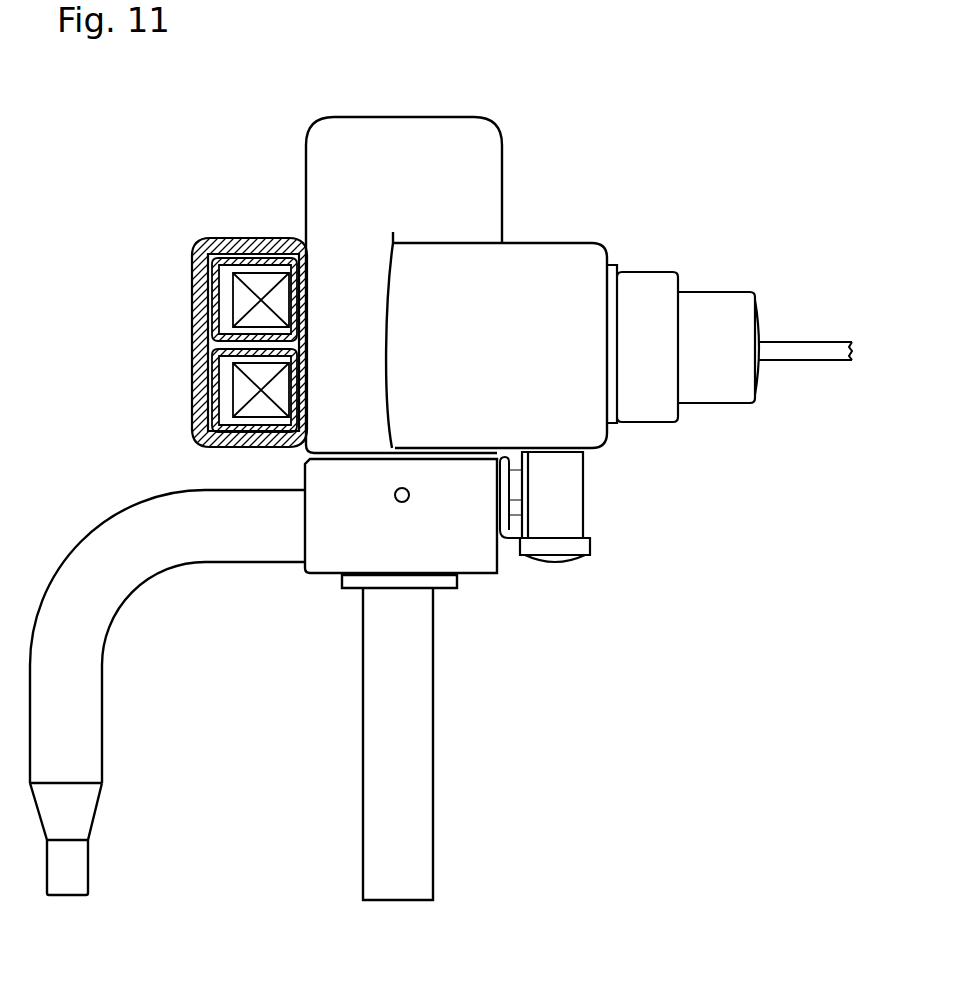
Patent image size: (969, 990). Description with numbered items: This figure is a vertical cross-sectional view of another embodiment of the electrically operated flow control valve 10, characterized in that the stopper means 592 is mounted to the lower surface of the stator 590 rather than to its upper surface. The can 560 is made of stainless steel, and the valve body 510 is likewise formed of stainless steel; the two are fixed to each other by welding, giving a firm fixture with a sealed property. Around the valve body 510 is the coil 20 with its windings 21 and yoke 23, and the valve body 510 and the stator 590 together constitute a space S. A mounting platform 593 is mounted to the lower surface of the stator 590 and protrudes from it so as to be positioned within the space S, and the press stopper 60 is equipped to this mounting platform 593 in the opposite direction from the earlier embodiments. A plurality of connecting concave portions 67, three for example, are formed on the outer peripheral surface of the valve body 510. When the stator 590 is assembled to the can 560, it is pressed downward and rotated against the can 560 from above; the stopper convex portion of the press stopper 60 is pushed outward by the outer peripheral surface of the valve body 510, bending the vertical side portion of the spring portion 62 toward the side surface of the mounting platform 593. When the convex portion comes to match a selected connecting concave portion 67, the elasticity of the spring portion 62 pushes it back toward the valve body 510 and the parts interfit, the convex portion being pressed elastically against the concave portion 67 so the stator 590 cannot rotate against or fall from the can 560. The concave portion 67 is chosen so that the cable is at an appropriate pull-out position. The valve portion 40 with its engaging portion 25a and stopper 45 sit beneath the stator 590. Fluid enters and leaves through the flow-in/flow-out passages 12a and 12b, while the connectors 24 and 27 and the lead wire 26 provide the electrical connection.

The solenoid valve 10 is at (195, 236).
The flow-in/flow-out passage 12a is at (97, 763).
The flow-in/flow-out passage 12b is at (363, 765).
The coil assembly 20 is at (237, 238).
The coil winding 21 is at (245, 300).
The yoke 23 is at (218, 442).
The connector 24 is at (646, 272).
The engaging portion 25a is at (498, 528).
The lead wire 26 is at (798, 342).
The connector 27 is at (714, 292).
The valve body 40 is at (496, 491).
The stopper 45 is at (565, 560).
The press stopper 60 is at (506, 546).
The spring portion 62 is at (526, 492).
The connecting concave portion 67 is at (395, 495).
The valve body 510 is at (478, 568).
The can 560 is at (352, 117).
The stator 590 is at (560, 243).
The stopper means 592 is at (594, 519).
The mounting platform 593 is at (580, 498).
The space S is at (530, 566).